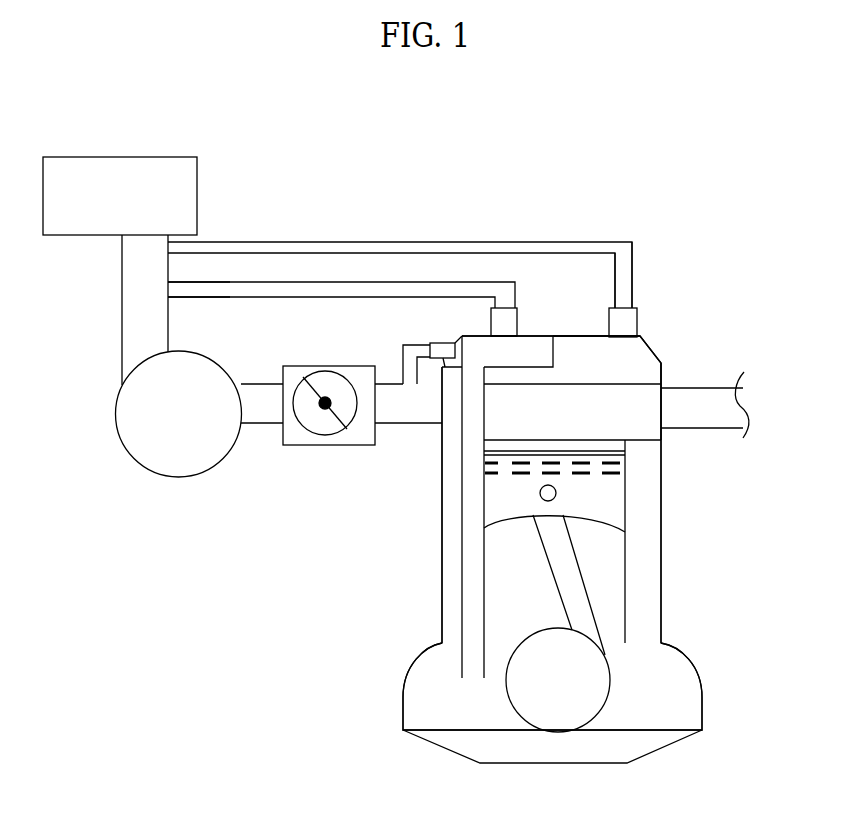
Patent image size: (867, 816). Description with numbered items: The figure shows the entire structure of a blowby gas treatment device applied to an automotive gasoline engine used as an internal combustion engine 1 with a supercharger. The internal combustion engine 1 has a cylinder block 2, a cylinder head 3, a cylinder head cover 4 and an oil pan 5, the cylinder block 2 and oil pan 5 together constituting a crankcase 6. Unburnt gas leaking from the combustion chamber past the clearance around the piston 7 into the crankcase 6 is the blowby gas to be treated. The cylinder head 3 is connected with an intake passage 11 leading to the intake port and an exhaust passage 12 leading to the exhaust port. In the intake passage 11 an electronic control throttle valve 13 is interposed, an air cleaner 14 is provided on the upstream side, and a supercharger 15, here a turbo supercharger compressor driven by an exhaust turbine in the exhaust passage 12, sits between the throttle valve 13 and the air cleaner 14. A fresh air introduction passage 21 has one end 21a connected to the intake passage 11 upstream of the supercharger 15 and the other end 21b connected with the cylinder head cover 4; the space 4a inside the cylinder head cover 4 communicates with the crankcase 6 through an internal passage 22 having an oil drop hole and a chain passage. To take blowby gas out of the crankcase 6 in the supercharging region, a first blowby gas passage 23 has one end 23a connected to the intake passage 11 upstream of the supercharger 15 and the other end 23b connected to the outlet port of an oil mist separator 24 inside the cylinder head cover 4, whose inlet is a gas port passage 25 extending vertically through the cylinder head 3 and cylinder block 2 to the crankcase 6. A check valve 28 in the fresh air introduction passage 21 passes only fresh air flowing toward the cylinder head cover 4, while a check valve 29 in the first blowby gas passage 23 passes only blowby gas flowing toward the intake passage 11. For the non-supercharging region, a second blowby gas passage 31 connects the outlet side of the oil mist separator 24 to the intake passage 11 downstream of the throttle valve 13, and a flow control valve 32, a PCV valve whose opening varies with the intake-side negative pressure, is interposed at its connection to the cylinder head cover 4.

The internal combustion engine 1 is at (698, 477).
The cylinder block 2 is at (663, 560).
The cylinder head 3 is at (661, 410).
The cylinder head cover 4 is at (655, 340).
The space 4a is at (593, 340).
The oil pan 5 is at (663, 747).
The crankcase 6 is at (686, 703).
The piston 7 is at (617, 512).
The intake passage 11 is at (255, 408).
The exhaust passage 12 is at (745, 395).
The electronic control throttle valve 13 is at (333, 423).
The air cleaner 14 is at (148, 183).
The supercharger 15 is at (127, 428).
The fresh air introduction passage 21 is at (413, 246).
The one end of fresh air introduction passage 21a is at (176, 247).
The other end of fresh air introduction passage 21b is at (623, 302).
The internal passage 22 is at (650, 598).
The first blowby gas passage 23 is at (277, 287).
The one end of first blowby gas passage 23a is at (180, 288).
The other end of first blowby gas passage 23b is at (512, 306).
The oil mist separator 24 is at (480, 345).
The gas port passage 25 is at (470, 560).
The check valve for fresh air introduction passage 28 is at (625, 322).
The check valve for blowby gas passage 29 is at (510, 327).
The second blowby gas passage 31 is at (405, 363).
The flow control valve 32 is at (443, 345).